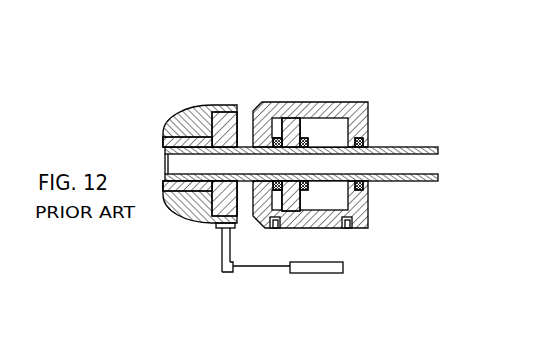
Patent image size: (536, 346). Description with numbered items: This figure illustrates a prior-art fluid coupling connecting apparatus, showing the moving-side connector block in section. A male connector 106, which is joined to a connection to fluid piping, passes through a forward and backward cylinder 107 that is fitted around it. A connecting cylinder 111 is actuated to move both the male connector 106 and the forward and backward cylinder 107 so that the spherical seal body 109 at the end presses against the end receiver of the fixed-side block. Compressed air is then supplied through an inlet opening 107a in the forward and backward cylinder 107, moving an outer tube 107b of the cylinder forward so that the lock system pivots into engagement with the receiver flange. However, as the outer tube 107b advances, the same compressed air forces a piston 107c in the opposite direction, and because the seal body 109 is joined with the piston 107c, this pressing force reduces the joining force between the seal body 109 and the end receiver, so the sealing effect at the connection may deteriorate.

The male connector 106 is at (422, 180).
The forward and backward cylinder 107 is at (315, 130).
The inlet opening 107a is at (274, 227).
The outer tube 107b is at (314, 104).
The piston 107c is at (293, 122).
The spherical seal body 109 is at (186, 117).
The connecting cylinder 111 is at (320, 274).